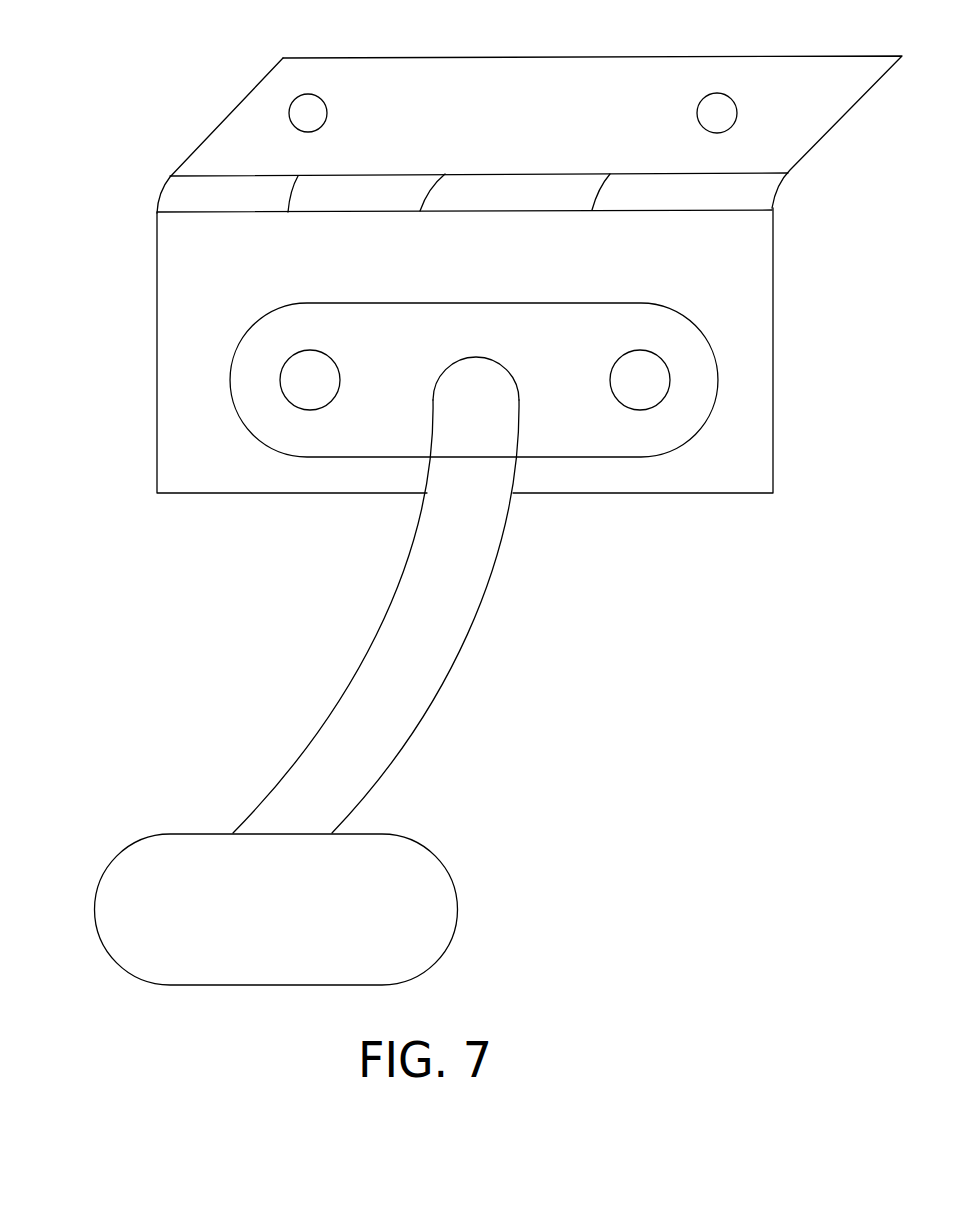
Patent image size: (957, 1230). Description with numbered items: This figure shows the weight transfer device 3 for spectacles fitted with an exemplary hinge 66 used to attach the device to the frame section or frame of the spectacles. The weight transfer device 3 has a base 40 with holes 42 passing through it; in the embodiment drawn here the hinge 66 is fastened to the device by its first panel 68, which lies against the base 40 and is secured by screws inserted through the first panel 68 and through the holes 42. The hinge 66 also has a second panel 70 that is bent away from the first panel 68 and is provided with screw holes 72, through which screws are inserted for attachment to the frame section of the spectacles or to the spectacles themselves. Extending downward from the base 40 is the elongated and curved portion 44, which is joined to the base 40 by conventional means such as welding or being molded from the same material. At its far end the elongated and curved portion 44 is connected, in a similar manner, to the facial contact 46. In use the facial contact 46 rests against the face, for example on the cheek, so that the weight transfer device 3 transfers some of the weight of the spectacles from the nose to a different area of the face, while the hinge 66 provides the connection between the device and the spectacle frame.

The weight transfer device 3 is at (514, 644).
The base 40 is at (540, 303).
The holes 42 is at (655, 407).
The elongated and curved portion 44 is at (497, 568).
The facial contact 46 is at (457, 908).
The hinge 66 is at (116, 256).
The first panel 68 is at (157, 343).
The second panel 70 is at (248, 92).
The screw holes 72 is at (327, 114).